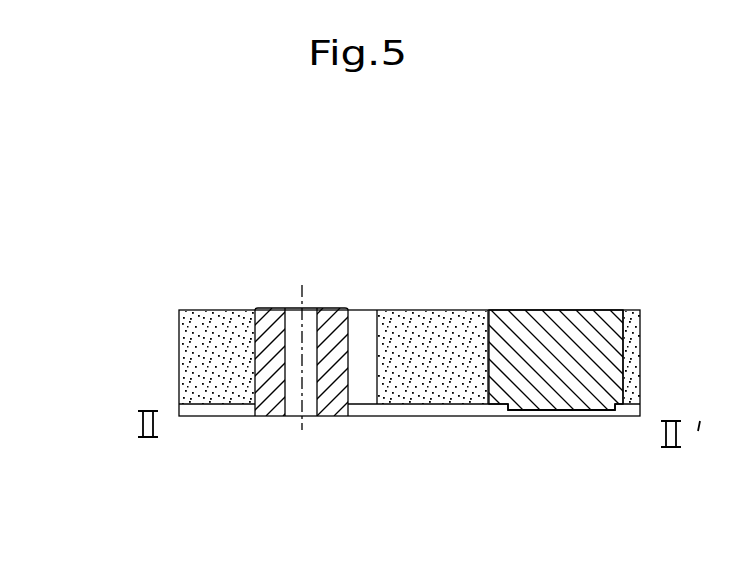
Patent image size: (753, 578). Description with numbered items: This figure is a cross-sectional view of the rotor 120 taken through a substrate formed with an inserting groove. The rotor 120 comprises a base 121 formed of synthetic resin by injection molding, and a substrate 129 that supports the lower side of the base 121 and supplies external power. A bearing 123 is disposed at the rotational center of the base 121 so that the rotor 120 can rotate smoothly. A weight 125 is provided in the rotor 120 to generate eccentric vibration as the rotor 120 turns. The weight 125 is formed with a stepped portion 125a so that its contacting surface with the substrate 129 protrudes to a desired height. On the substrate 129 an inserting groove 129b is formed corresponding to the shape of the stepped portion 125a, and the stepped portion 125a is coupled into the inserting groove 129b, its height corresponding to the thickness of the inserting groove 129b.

The rotor 120 is at (157, 292).
The base 121 is at (417, 332).
The bearing 123 is at (270, 308).
The weight 125 is at (580, 335).
The stepped portion 125a is at (528, 409).
The substrate 129 is at (210, 404).
The inserting groove 129b is at (565, 413).